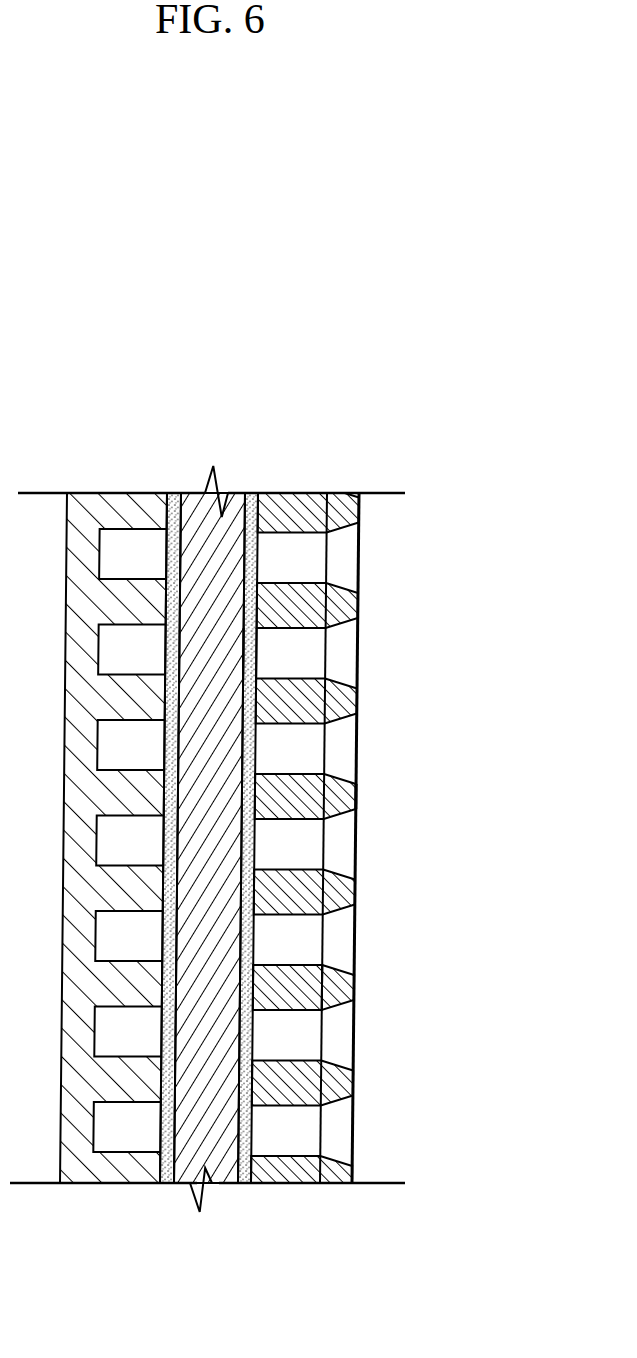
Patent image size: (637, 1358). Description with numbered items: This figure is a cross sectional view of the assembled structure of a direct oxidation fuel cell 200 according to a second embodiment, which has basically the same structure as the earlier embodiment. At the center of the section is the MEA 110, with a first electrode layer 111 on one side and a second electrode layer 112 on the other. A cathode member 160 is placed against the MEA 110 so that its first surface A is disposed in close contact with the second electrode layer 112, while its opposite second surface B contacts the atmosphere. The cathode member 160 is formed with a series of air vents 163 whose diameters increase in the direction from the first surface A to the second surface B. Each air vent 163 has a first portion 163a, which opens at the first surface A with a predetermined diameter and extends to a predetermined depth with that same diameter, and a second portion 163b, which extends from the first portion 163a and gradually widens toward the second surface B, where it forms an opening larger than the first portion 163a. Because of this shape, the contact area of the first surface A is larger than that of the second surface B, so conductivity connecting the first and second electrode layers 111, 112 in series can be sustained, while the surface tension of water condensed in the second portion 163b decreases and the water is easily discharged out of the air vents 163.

The direct oxidation fuel cell 200 is at (240, 412).
The MEA 110 is at (219, 1200).
The first electrode layer 111 is at (166, 1185).
The second electrode layer 112 is at (250, 1185).
The cathode member 160 is at (380, 891).
The air vent 163 is at (368, 745).
The first portion 163a is at (287, 1010).
The second portion 163b is at (353, 1013).
The first surface A is at (246, 660).
The second surface B is at (357, 795).